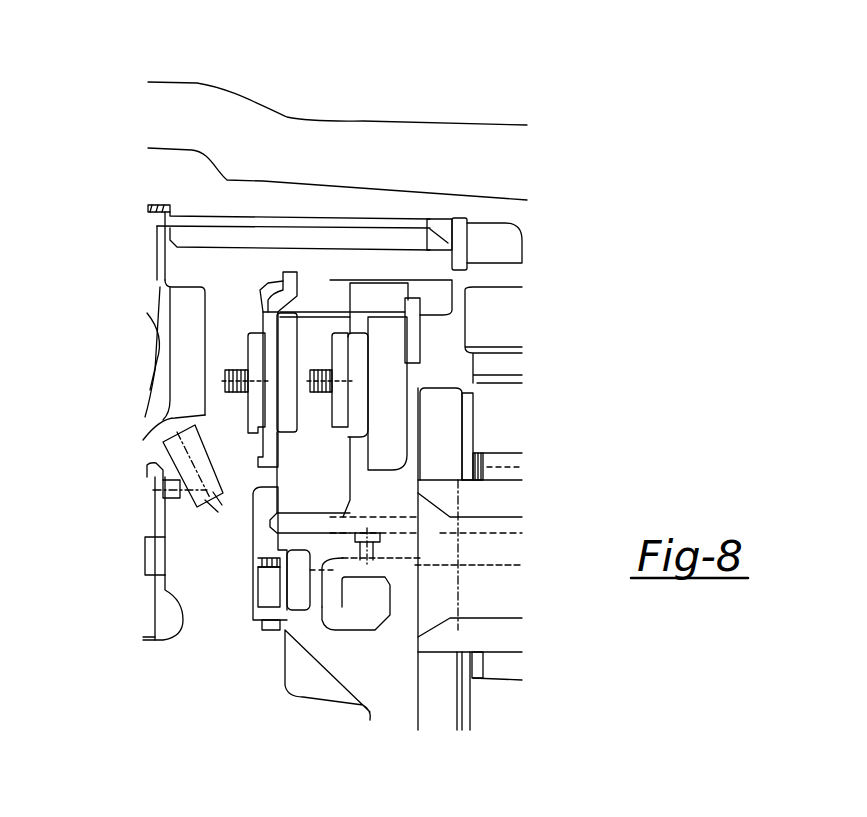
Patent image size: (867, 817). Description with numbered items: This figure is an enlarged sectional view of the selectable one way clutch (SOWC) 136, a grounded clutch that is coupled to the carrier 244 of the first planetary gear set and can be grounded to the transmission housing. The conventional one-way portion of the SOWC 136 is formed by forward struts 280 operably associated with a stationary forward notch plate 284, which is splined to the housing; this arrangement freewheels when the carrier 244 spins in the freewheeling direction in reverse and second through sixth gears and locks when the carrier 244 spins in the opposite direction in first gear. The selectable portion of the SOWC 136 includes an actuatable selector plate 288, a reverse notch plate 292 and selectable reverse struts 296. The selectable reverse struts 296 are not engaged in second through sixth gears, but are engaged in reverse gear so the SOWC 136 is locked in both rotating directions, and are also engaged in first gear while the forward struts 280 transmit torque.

The selectable one way clutch (SOWC) 136 is at (431, 108).
The selector plate 288 is at (277, 277).
The reverse notch plate 292 is at (283, 432).
The selectable reverse struts 296 is at (257, 337).
The forward struts 280 is at (343, 402).
The forward notch plate 284 is at (368, 373).
The carrier 244 is at (393, 527).